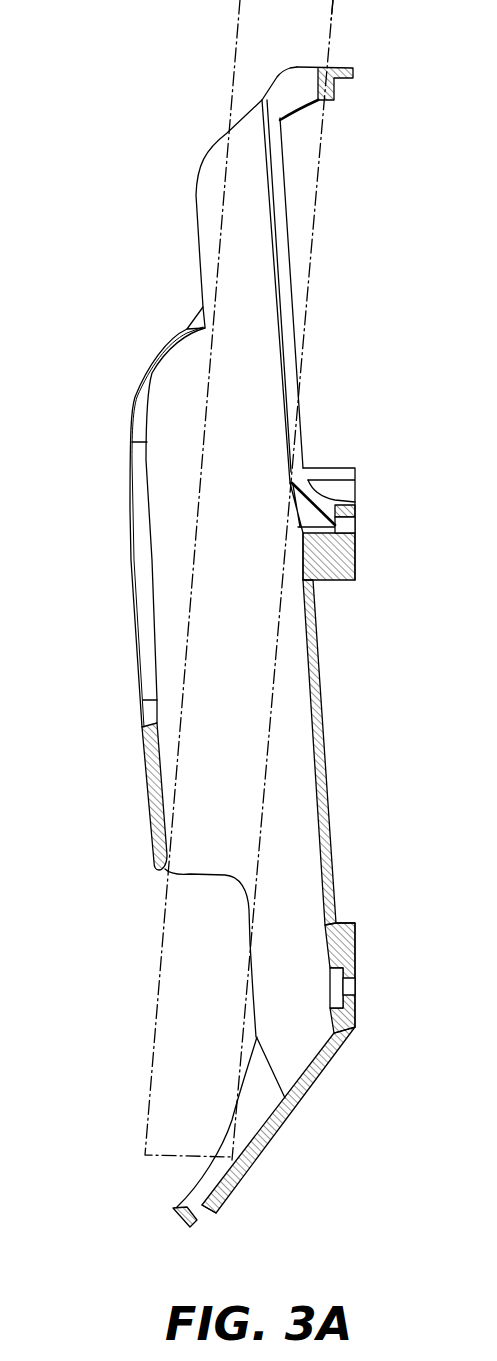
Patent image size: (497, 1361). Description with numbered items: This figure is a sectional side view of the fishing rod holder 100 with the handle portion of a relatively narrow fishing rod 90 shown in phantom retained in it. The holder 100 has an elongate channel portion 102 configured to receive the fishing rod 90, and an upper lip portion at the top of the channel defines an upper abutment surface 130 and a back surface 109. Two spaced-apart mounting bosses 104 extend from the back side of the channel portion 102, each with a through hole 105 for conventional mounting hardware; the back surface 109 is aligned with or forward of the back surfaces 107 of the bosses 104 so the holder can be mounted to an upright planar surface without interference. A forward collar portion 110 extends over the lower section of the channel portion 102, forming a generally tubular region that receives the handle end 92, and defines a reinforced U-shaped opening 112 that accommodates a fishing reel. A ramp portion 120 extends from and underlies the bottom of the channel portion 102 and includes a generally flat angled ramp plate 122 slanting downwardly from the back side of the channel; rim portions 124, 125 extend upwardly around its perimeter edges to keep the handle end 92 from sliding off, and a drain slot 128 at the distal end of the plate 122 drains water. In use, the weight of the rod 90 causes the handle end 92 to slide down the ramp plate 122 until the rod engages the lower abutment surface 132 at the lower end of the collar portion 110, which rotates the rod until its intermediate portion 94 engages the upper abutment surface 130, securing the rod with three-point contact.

The fishing rod 90 is at (313, 230).
The handle end 92 is at (160, 1157).
The intermediate portion 94 is at (332, 18).
The fishing rod holder 100 is at (107, 356).
The channel portion 102 is at (325, 743).
The mounting bosses 104 is at (338, 488).
The through holes 105 is at (347, 522).
The back surfaces 107 is at (357, 557).
The back surface 109 is at (353, 70).
The collar portion 110 is at (142, 758).
The U-shaped opening 112 is at (148, 607).
The ramp portion 120 is at (333, 1071).
The angled ramp plate 122 is at (268, 1131).
The rim portion 124 is at (203, 1185).
The rim portion 125 is at (175, 1208).
The drain slot 128 is at (205, 1212).
The upper abutment surface 130 is at (312, 100).
The lower abutment surface 132 is at (165, 862).